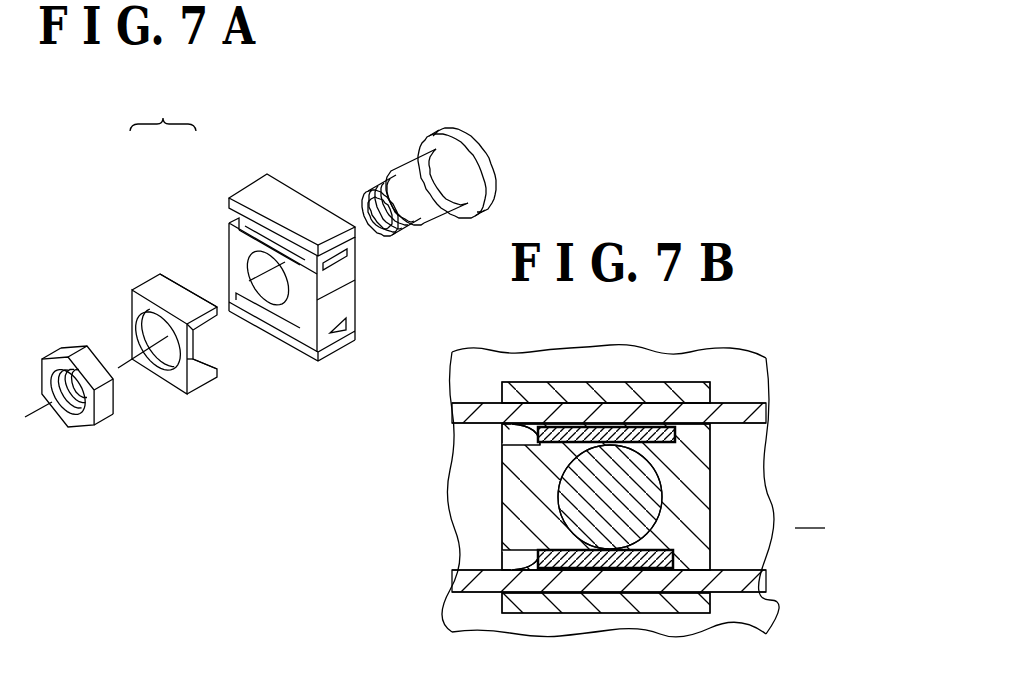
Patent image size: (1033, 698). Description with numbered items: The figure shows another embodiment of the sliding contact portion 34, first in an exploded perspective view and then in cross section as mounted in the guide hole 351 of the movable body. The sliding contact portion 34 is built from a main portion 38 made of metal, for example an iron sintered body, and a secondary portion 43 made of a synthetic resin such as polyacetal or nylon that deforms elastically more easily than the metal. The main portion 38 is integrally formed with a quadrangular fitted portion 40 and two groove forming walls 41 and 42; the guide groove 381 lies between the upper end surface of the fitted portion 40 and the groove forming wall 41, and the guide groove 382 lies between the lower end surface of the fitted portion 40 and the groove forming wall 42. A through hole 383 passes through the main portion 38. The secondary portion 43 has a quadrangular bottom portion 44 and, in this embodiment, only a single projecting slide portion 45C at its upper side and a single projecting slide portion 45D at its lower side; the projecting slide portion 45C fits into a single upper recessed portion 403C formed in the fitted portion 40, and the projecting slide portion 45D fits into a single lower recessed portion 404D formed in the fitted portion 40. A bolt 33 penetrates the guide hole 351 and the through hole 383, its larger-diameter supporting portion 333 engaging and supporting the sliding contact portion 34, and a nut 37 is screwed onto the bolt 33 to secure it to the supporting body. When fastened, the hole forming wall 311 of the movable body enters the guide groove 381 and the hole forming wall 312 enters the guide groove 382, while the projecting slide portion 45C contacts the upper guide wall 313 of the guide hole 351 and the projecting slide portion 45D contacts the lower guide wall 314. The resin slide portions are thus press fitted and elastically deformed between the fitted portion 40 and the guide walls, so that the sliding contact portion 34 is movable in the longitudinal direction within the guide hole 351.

In FIG. 7A, the bolt 33 is at (487, 155).
In FIG. 7B, the supporting portion 333 is at (650, 478).
In FIG. 7A, the sliding contact portion 34 is at (163, 113).
In FIG. 7A, the nut 37 is at (58, 347).
In FIG. 7A, the main portion 38 is at (232, 183).
In FIG. 7B, the main portion 38 is at (634, 493).
In FIG. 7A, the fitted portion 40 is at (173, 321).
In FIG. 7B, the fitted portion 40 is at (502, 492).
In FIG. 7A, the groove forming wall 41 is at (228, 202).
In FIG. 7B, the groove forming wall 41 is at (614, 382).
In FIG. 7A, the groove forming wall 42 is at (340, 362).
In FIG. 7B, the groove forming wall 42 is at (606, 614).
In FIG. 7A, the secondary portion 43 is at (137, 250).
In FIG. 7A, the bottom portion 44 is at (134, 330).
In FIG. 7A, the projecting slide portion 45C is at (173, 292).
In FIG. 7B, the projecting slide portion 45C is at (502, 455).
In FIG. 7A, the projecting slide portion 45D is at (206, 380).
In FIG. 7B, the projecting slide portion 45D is at (502, 556).
In FIG. 7B, the hole forming wall 311 is at (745, 416).
In FIG. 7B, the hole forming wall 312 is at (740, 588).
In FIG. 7B, the upper guide wall 313 is at (475, 424).
In FIG. 7B, the lower guide wall 314 is at (470, 578).
In FIG. 7B, the guide hole 351 is at (470, 522).
In FIG. 7A, the guide groove 381 is at (340, 263).
In FIG. 7A, the guide groove 382 is at (340, 338).
In FIG. 7A, the through hole 383 is at (330, 290).
In FIG. 7A, the upper recessed portion 403C is at (277, 243).
In FIG. 7B, the upper recessed portion 403C is at (710, 446).
In FIG. 7A, the lower recessed portion 404D is at (272, 325).
In FIG. 7B, the lower recessed portion 404D is at (710, 553).